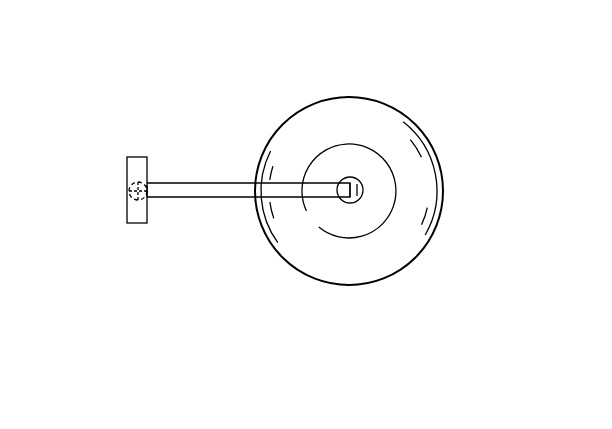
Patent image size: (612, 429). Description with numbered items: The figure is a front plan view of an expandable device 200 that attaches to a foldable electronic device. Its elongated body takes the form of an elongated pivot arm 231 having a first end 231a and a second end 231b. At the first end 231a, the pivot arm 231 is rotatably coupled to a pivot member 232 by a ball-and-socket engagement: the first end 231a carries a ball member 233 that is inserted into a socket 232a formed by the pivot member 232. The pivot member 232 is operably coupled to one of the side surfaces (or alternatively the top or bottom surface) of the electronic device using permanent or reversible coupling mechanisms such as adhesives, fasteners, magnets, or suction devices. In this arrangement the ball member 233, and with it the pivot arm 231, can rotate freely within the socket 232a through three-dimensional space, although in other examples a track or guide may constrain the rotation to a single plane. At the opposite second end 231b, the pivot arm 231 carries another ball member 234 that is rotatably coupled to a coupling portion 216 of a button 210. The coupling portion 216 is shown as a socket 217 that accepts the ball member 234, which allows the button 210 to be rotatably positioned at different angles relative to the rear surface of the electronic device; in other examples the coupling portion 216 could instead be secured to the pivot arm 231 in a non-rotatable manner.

The expandable device 200 is at (222, 183).
The button 210 is at (415, 146).
The coupling portion 216 is at (380, 190).
The socket 217 is at (359, 177).
The elongated pivot arm 231 is at (227, 197).
The first end 231a is at (159, 213).
The second end 231b is at (352, 165).
The pivot member 232 is at (130, 167).
The socket 232a is at (156, 173).
The ball member 233 is at (128, 191).
The ball member 234 is at (355, 203).